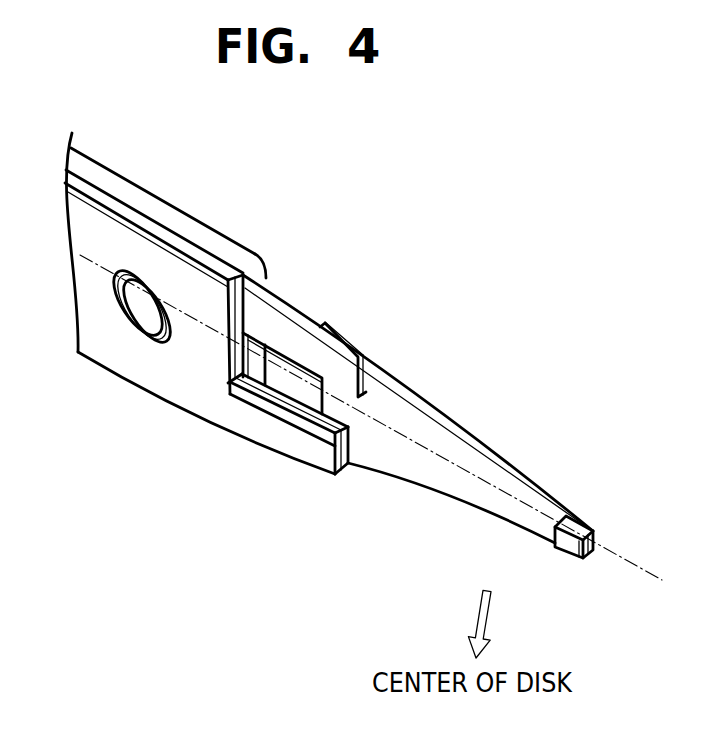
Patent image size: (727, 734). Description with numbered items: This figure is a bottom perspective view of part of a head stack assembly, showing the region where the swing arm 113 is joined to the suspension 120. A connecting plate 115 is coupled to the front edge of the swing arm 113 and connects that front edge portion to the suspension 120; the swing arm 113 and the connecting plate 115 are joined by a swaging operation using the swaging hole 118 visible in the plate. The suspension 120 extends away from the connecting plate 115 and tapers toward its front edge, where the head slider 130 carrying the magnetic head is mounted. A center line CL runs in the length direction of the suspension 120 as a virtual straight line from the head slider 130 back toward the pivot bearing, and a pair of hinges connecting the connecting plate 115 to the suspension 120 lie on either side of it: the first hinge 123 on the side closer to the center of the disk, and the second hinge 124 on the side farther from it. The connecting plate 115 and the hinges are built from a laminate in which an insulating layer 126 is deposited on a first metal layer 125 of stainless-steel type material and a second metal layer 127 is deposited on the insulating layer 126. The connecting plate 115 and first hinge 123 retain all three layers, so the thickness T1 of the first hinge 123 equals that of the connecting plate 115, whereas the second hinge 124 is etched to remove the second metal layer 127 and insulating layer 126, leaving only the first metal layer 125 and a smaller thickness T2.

The swing arm 113 is at (243, 257).
The connecting plate 115 is at (178, 361).
The swaging hole 118 is at (142, 322).
The suspension 120 is at (472, 500).
The first hinge 123 is at (305, 441).
The second hinge 124 is at (288, 353).
The first metal layer 125 is at (112, 195).
The insulating layer 126 is at (142, 225).
The second metal layer 127 is at (175, 252).
The head slider 130 is at (573, 542).
The thickness of the first hinge T1 is at (410, 463).
The thickness of the second hinge T2 is at (362, 402).
The center line CL is at (638, 573).